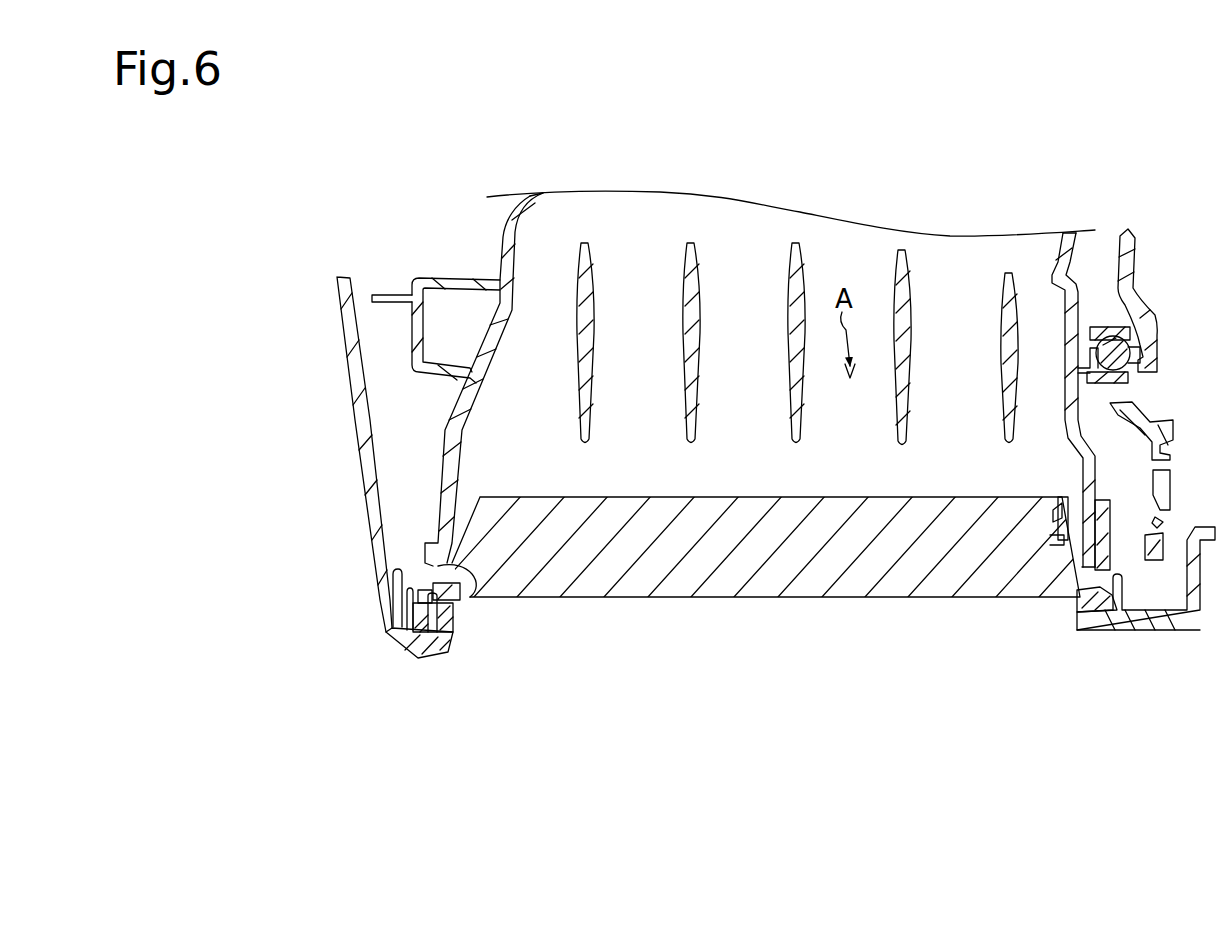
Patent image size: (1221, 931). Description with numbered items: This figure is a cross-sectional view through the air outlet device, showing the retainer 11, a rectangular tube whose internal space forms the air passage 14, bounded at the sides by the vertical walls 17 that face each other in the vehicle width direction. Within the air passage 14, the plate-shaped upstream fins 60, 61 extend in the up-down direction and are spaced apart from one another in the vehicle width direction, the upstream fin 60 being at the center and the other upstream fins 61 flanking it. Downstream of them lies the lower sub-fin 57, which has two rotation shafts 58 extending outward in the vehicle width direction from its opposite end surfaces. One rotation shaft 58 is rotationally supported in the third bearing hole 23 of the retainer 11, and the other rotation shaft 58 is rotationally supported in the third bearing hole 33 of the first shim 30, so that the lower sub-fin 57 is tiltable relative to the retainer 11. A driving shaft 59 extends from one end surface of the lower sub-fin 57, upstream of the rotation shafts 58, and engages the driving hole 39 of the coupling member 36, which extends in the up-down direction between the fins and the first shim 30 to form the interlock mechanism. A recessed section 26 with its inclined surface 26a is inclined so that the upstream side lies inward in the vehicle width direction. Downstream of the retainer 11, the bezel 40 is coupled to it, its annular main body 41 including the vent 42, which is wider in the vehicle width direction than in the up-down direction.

The retainer 11 is at (445, 436).
The air passage 14 is at (757, 266).
The vertical wall 17 is at (442, 469).
The third bearing hole 23 is at (465, 586).
The recessed section 26 is at (508, 617).
The inclined surface 26a is at (450, 600).
The first shim 30 is at (1107, 527).
The third bearing hole 33 is at (1073, 583).
The coupling member 36 is at (1067, 493).
The driving hole 39 is at (1070, 525).
The bezel 40 is at (408, 654).
The main body 41 is at (412, 651).
The vent 42 is at (452, 637).
The lower sub-fin 57 is at (704, 598).
The rotation shaft 58 is at (428, 579).
The driving shaft 59 is at (1100, 504).
The upstream fin 60 is at (797, 243).
The upstream fin 61 is at (584, 243).